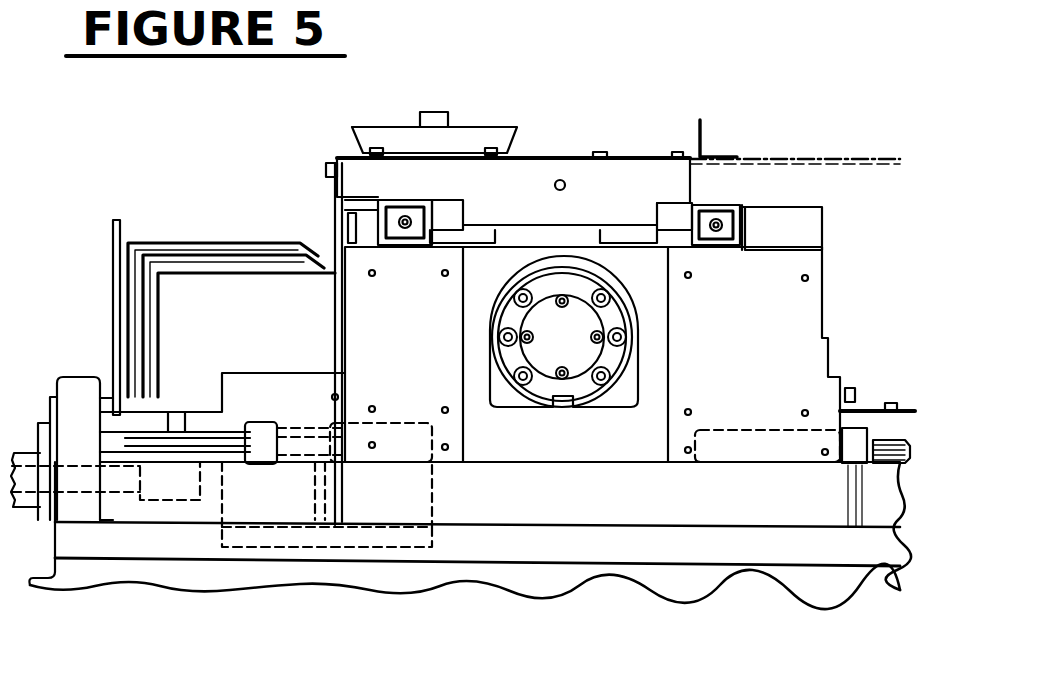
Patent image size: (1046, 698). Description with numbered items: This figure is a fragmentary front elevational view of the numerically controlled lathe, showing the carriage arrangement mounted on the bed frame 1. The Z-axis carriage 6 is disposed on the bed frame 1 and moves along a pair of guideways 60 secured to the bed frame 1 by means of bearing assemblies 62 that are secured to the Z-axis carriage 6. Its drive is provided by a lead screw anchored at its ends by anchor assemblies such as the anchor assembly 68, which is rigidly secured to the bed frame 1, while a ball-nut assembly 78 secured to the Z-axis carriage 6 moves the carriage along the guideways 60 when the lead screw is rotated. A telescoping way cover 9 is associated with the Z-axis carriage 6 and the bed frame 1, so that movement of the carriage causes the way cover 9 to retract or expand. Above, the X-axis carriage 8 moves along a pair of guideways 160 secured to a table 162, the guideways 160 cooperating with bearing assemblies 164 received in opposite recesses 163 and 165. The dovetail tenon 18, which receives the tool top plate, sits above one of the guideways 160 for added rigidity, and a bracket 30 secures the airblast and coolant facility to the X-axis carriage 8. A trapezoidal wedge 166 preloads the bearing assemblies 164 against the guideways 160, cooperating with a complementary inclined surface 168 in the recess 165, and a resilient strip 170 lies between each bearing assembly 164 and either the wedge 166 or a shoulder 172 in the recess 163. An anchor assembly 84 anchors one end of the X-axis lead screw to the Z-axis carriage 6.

The bed frame 1 is at (283, 583).
The Z-axis carriage 6 is at (828, 320).
The X-axis carriage 8 is at (634, 158).
The telescoping way cover 9 is at (193, 230).
The dovetail tenon 18 is at (394, 122).
The bracket 30 is at (700, 120).
The guideways 60 is at (212, 425).
The bearing assemblies 62 is at (262, 425).
The anchor assembly 68 is at (38, 413).
The ball-nut assembly 78 is at (370, 525).
The anchor assembly 84 is at (637, 344).
The guideways 160 is at (452, 200).
The table 162 is at (548, 158).
The recess 163 is at (452, 243).
The bearing assemblies 164 is at (398, 204).
The recess 165 is at (672, 243).
The trapezoidal wedge 166 is at (768, 212).
The inclined surface 168 is at (782, 237).
The resilient strip 170 is at (405, 248).
The shoulder 172 is at (372, 220).